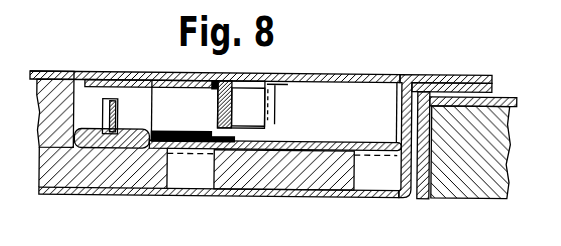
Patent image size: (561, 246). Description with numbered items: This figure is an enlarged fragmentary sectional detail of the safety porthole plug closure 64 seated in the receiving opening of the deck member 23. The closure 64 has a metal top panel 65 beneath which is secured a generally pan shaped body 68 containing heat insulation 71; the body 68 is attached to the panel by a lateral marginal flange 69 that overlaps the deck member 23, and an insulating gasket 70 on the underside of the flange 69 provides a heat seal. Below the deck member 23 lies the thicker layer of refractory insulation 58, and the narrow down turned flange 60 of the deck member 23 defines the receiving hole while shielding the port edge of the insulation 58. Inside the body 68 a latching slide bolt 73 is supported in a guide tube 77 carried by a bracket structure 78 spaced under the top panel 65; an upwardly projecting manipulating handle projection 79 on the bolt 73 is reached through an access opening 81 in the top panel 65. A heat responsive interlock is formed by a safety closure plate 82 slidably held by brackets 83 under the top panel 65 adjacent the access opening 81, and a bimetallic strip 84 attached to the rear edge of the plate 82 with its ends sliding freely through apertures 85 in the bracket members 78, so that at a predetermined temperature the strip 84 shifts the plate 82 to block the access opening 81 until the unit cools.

The deck member 23 is at (518, 96).
The refractory insulation layer 58 is at (462, 194).
The down turned flange 60 is at (423, 196).
The safety porthole plug closure 64 is at (401, 71).
The top panel 65 is at (378, 71).
The pan shaped body 68 is at (300, 194).
The lateral marginal flange 69 is at (460, 79).
The insulating gasket 70 is at (517, 93).
The heat insulation 71 is at (66, 176).
The slide bolt 73 is at (120, 147).
The guide tube 77 is at (74, 129).
The bracket structure 78 is at (342, 88).
The manipulating handle projection 79 is at (104, 105).
The access opening 81 is at (131, 72).
The safety closure plate 82 is at (152, 79).
The brackets 83 is at (200, 93).
The bimetallic strip 84 is at (252, 122).
The apertures 85 is at (281, 78).